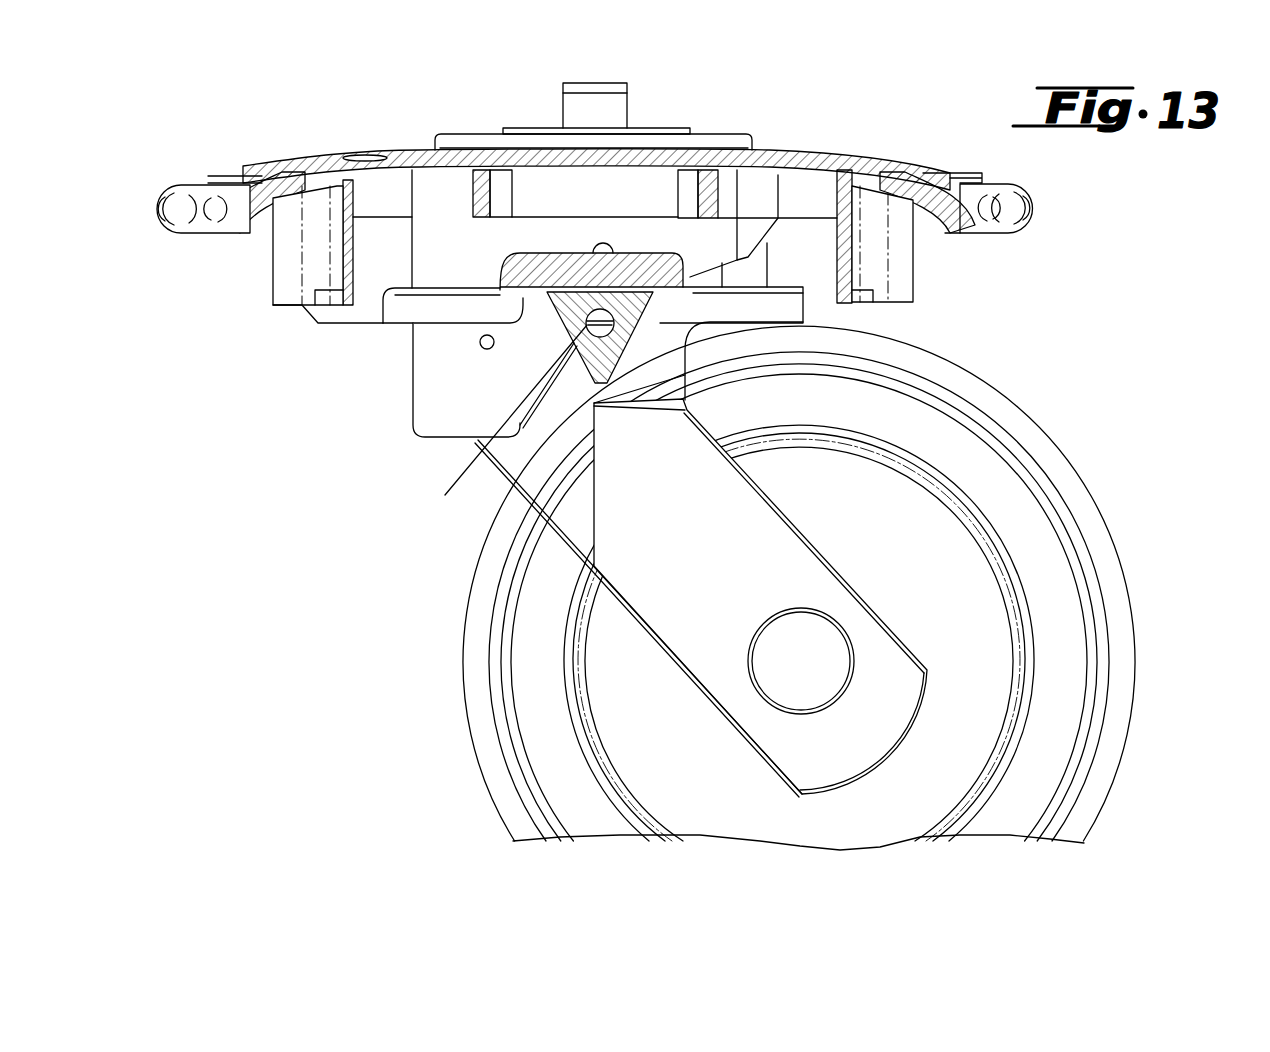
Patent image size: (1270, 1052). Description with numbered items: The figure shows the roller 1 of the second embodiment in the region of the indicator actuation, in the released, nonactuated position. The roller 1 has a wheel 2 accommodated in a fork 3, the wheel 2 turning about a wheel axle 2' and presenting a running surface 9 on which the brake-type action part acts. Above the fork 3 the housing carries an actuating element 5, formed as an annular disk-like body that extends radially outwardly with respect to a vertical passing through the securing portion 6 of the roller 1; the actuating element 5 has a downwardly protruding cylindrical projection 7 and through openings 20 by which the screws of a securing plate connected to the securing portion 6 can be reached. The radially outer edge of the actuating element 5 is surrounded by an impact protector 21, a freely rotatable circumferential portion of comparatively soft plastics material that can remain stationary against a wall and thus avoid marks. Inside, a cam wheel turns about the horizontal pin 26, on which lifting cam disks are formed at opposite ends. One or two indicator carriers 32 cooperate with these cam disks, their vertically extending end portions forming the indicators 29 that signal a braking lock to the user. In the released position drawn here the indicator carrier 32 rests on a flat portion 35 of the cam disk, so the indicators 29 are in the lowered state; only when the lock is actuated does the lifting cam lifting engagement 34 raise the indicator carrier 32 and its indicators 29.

The roller 1 is at (246, 129).
The wheel 2 is at (843, 588).
The wheel axle 2' is at (994, 661).
The fork 3 is at (728, 531).
The actuating element 5 is at (870, 157).
The securing portion 6 is at (530, 130).
The cylindrical projection 7 is at (460, 402).
The running surface 9 is at (1090, 520).
The through openings 20 is at (388, 152).
The impact protector 21 is at (173, 205).
The pin 26 is at (445, 495).
The indicators 29 is at (317, 175).
The indicator carrier 32 is at (360, 317).
The lifting cam lifting engagement 34 is at (520, 295).
The flat portion 35 is at (547, 323).